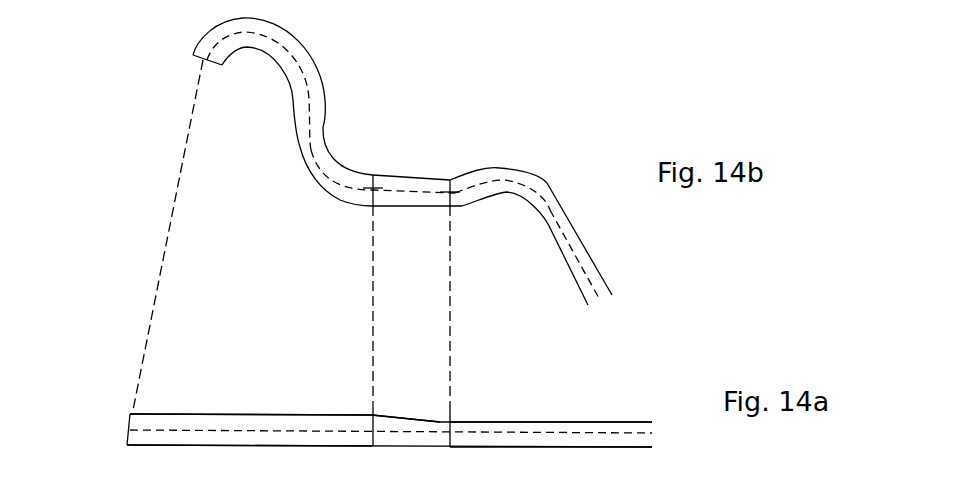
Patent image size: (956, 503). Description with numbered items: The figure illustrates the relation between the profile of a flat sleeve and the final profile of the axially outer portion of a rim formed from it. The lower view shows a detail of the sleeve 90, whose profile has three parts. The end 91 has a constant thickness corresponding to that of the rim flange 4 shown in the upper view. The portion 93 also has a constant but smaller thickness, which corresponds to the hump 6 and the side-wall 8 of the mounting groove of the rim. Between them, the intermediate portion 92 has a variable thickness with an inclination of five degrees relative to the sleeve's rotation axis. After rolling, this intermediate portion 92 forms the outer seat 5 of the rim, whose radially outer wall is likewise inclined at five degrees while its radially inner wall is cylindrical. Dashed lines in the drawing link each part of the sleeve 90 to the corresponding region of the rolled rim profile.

In FIG. 14B, the rim flange 4 is at (227, 37).
In FIG. 14B, the outer seat 5 is at (387, 195).
In FIG. 14B, the hump 6 is at (510, 185).
In FIG. 14B, the side-wall of the mounting groove 8 is at (580, 253).
In FIG. 14A, the sleeve 90 is at (220, 386).
In FIG. 14A, the end of the sleeve 91 is at (253, 432).
In FIG. 14A, the intermediate portion of the sleeve 92 is at (430, 426).
In FIG. 14A, the portion of the sleeve 93 is at (607, 433).